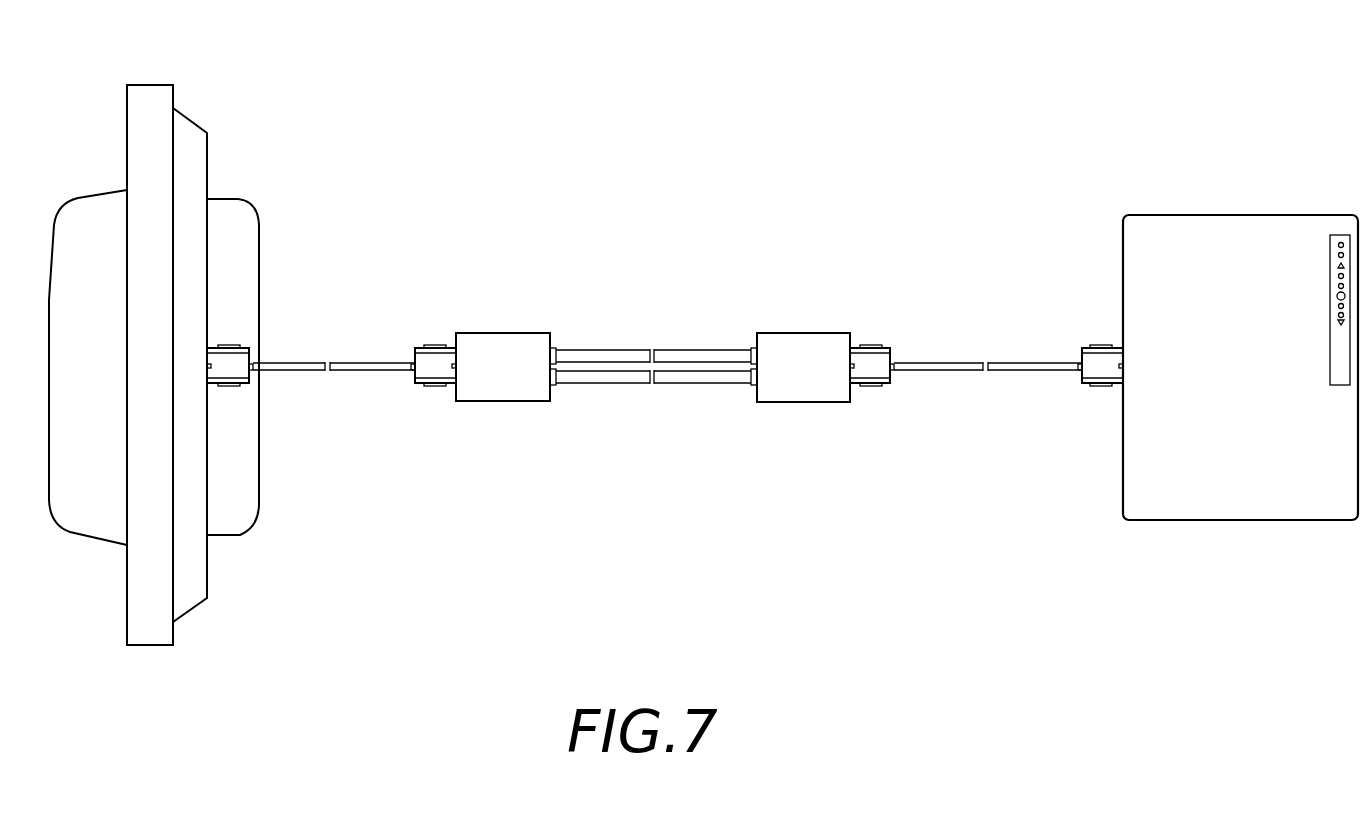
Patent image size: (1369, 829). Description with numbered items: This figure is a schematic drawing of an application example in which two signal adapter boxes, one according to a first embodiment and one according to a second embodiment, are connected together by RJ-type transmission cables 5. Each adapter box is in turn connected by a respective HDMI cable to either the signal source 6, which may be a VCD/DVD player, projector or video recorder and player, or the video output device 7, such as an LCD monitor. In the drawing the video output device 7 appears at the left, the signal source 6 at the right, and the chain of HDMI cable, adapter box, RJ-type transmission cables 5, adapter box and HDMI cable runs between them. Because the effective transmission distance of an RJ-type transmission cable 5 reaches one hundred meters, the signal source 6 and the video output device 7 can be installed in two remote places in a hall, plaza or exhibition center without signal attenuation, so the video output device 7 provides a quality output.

The RJ-type transmission cable 5 is at (613, 352).
The signal source 6 is at (1216, 225).
The video output device 7 is at (148, 95).